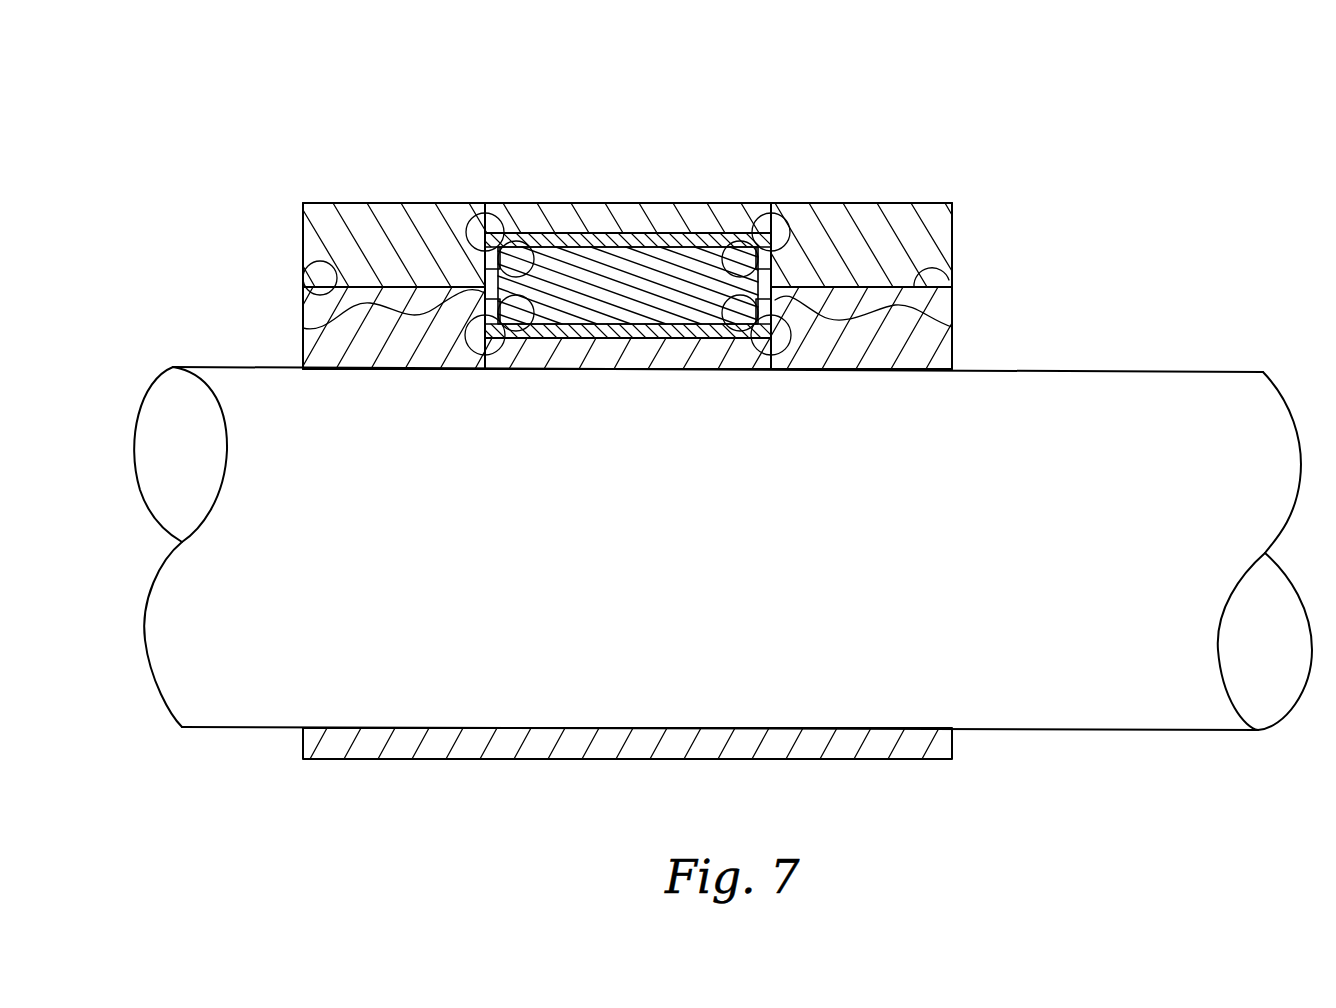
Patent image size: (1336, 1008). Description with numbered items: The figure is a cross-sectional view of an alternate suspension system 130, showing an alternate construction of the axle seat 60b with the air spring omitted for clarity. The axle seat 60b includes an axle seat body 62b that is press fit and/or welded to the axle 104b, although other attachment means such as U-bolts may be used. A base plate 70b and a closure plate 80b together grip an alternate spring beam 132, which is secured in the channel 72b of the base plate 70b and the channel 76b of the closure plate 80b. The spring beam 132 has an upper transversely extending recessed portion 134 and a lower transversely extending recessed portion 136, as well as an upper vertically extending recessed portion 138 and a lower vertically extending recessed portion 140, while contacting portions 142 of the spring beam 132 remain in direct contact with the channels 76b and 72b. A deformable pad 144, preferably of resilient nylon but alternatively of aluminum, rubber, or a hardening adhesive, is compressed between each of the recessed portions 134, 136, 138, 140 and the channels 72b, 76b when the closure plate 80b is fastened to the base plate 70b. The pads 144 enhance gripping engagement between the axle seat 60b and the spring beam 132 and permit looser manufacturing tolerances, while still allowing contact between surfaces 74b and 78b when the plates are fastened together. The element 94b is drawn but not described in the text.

The suspension system 130 is at (257, 99).
The spring beam 132 is at (640, 222).
The upper transversely extending recessed portion 134 is at (623, 233).
The lower transversely extending recessed portion 136 is at (615, 338).
The upper vertically extending recessed portion 138 is at (488, 213).
The lower vertically extending recessed portion 140 is at (488, 355).
The contacting portions 142 is at (303, 328).
The deformable pad 144 is at (570, 245).
The axle seat 60b is at (282, 350).
The axle seat body 62b is at (887, 778).
The base plate 70b is at (975, 352).
The channel 72b is at (655, 340).
The surface 74b is at (950, 279).
The channel 76b is at (683, 233).
The surface 78b is at (303, 263).
The closure plate 80b is at (975, 223).
The upper right housing 94b is at (888, 203).
The axle 104b is at (1140, 372).